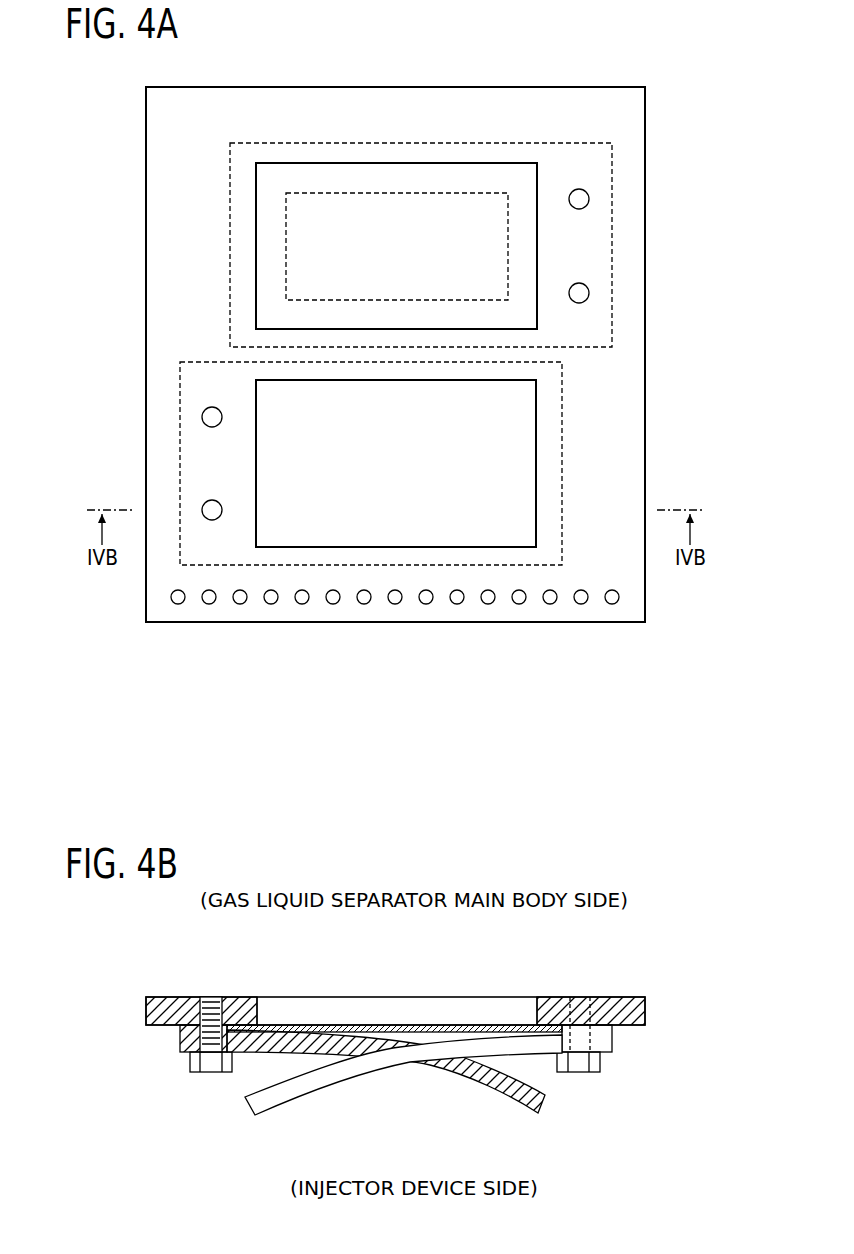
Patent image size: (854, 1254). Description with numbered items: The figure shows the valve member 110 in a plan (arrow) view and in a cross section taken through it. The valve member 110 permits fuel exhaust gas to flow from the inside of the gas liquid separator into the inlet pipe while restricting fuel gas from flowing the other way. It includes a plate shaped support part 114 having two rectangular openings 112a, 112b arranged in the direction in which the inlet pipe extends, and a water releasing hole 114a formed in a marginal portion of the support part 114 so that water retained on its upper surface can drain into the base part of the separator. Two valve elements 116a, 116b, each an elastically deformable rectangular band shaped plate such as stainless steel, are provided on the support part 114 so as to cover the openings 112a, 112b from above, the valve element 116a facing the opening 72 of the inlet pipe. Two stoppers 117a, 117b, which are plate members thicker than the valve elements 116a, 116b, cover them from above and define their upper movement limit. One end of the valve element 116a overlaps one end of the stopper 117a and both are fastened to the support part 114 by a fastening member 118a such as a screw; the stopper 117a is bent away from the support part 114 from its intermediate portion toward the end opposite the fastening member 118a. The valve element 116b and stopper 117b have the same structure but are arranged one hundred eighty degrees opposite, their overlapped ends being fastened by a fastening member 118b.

In FIG. 4A, the valve member 110 is at (650, 101).
In FIG. 4B, the valve member 110 is at (649, 1003).
In FIG. 4A, the opening 112a is at (311, 164).
In FIG. 4A, the opening 112b is at (333, 547).
In FIG. 4B, the opening 112b is at (282, 960).
In FIG. 4A, the support part 114 is at (624, 374).
In FIG. 4B, the support part 114 is at (621, 1024).
In FIG. 4A, the water releasing hole 114a is at (551, 604).
In FIG. 4A, the valve element 116a is at (230, 185).
In FIG. 4B, the valve element 116a is at (598, 1028).
In FIG. 4A, the valve element 116b is at (562, 437).
In FIG. 4B, the valve element 116b is at (398, 1028).
In FIG. 4B, the stopper 117a is at (282, 1093).
In FIG. 4B, the stopper 117b is at (498, 1097).
In FIG. 4A, the fastening member 118a is at (582, 289).
In FIG. 4B, the fastening member 118a is at (580, 1073).
In FIG. 4A, the fastening member 118b is at (210, 504).
In FIG. 4B, the fastening member 118b is at (211, 1073).
In FIG. 4A, the opening 72 is at (404, 296).